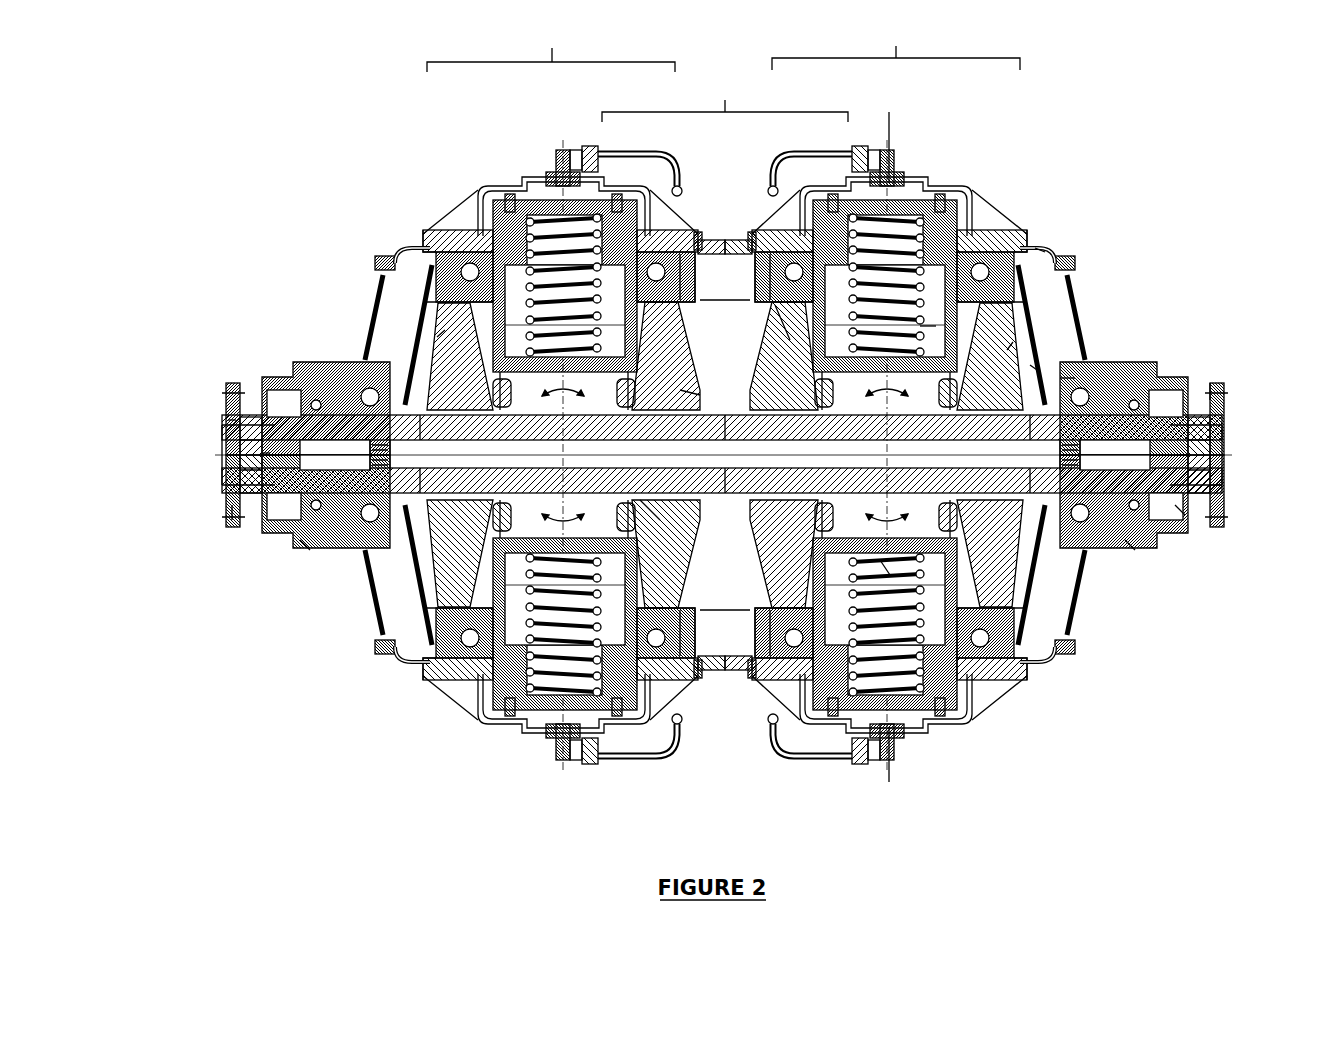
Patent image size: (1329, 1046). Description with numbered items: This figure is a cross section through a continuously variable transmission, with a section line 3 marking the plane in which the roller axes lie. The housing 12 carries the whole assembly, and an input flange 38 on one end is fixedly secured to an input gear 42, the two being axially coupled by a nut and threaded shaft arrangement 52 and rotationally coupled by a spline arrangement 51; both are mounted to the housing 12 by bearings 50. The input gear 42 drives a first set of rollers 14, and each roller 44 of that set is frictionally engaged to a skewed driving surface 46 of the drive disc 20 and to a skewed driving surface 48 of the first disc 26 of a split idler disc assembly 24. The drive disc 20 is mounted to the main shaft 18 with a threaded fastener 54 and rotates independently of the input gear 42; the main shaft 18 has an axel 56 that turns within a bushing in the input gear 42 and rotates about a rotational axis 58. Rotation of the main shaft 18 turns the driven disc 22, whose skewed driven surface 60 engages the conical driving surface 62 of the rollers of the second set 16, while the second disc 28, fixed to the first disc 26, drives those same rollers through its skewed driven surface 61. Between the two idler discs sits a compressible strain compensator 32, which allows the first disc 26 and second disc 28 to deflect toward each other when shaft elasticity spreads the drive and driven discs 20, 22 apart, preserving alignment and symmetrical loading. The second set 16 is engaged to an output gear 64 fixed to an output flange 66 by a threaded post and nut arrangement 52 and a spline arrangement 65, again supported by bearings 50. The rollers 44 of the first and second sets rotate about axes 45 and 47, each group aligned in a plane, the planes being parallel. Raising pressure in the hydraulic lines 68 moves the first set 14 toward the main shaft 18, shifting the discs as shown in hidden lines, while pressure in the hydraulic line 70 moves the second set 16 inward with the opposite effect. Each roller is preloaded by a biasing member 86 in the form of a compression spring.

The section line 3- 3 is at (915, 777).
The housing 12 is at (1215, 392).
The first set of rollers 14 is at (896, 45).
The second set of rollers 16 is at (551, 46).
The main shaft 18 is at (1060, 378).
The drive disc 20 is at (1030, 365).
The driven disc 22 is at (440, 325).
The split idler disc assembly 24 is at (725, 97).
The first disc 26 is at (778, 345).
The second disc 28 is at (676, 340).
The strain compensator 32 is at (690, 380).
The input flange 38 is at (1215, 492).
The input gear 42 is at (1040, 248).
The roller 44 is at (437, 337).
The axis 45 is at (880, 560).
The skewed driving surface 46 is at (928, 330).
The axis 47 is at (640, 500).
The skewed driving surface 48 is at (820, 357).
The bearings 50 is at (300, 362).
The spline arrangement 51 is at (1190, 460).
The nut and threaded shaft arrangement 52 is at (1180, 510).
The threaded fastener 54 is at (421, 343).
The axel 56 is at (1130, 545).
The rotational axis 58 is at (1035, 585).
The skewed driven surface 60 is at (448, 262).
The skewed driven surface 61 is at (618, 288).
The conical driving surface 62 is at (432, 303).
The output gear 64 is at (405, 255).
The spline arrangement 65 is at (262, 453).
The output flange 66 is at (232, 420).
The hydraulic lines 68 is at (777, 163).
The hydraulic line 70 is at (675, 160).
The biasing member 86 is at (520, 185).